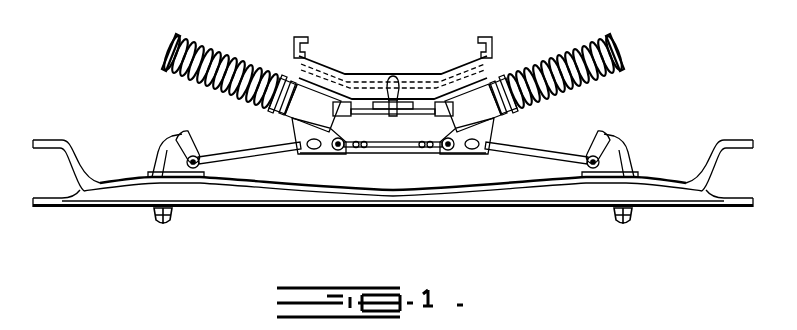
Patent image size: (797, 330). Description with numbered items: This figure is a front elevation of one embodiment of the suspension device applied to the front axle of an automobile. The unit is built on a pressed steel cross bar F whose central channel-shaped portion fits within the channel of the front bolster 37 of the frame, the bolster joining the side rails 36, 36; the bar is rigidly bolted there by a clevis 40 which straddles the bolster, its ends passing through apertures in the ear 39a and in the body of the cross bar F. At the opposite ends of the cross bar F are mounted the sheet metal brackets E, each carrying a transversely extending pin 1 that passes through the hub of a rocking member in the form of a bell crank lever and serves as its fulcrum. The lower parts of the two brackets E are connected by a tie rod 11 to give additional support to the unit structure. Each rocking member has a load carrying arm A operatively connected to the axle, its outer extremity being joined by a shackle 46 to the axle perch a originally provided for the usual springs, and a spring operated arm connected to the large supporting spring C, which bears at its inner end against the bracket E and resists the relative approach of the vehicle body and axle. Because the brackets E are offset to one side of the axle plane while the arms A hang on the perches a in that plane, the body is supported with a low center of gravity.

The pin 1 is at (318, 155).
The tie rod 11 is at (394, 152).
The side rail 36 is at (306, 42).
The front bolster 37 is at (367, 81).
The ear 39a is at (405, 110).
The clevis 40 is at (393, 75).
The shackle 46 is at (193, 147).
The load carrying arm A is at (281, 151).
The supporting spring C is at (214, 51).
The bracket E is at (297, 132).
The cross bar F is at (472, 86).
The perch a is at (161, 152).